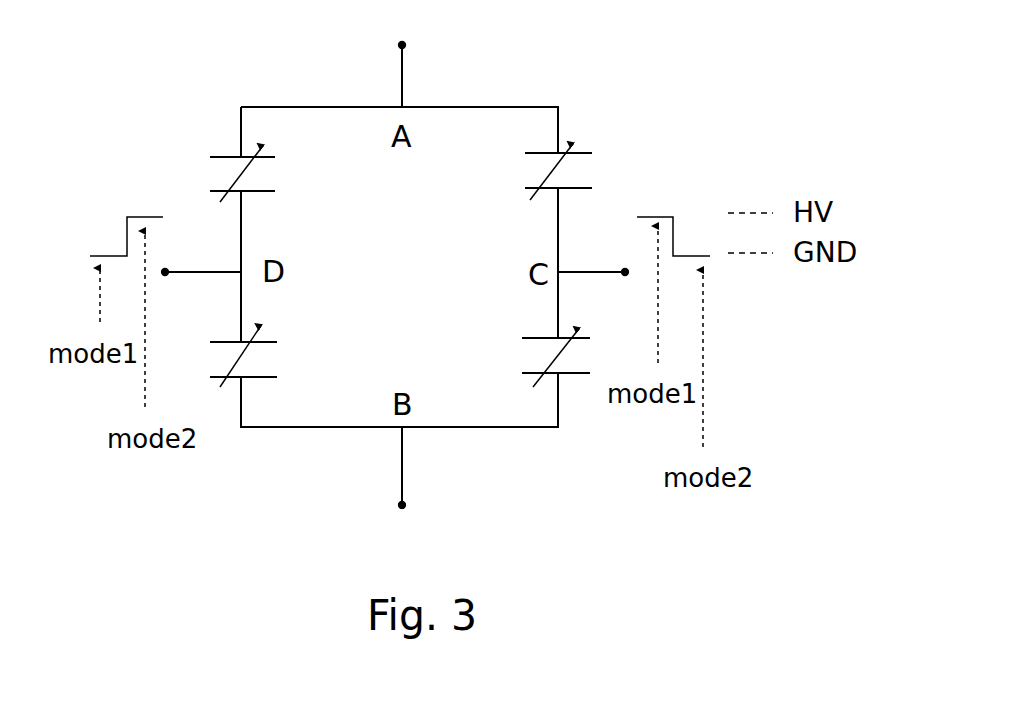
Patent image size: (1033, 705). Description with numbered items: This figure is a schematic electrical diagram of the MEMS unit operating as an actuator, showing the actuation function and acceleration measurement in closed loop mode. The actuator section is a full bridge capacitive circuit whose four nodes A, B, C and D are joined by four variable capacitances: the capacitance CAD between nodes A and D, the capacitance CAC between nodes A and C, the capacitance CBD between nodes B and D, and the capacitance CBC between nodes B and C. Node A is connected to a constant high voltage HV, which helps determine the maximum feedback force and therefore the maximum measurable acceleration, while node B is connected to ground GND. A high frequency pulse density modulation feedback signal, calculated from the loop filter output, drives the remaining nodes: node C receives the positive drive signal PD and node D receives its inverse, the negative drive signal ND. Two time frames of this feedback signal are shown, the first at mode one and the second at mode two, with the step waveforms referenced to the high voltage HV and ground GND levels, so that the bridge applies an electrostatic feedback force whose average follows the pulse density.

The high voltage HV is at (402, 53).
The ground GND is at (407, 488).
The negative drive signal ND is at (202, 256).
The positive drive signal PD is at (593, 256).
The variable capacitor between nodes A and D CAD is at (272, 174).
The variable capacitor between nodes A and C CAC is at (531, 172).
The variable capacitor between nodes B and D CBD is at (271, 357).
The variable capacitor between nodes B and C CBC is at (528, 358).